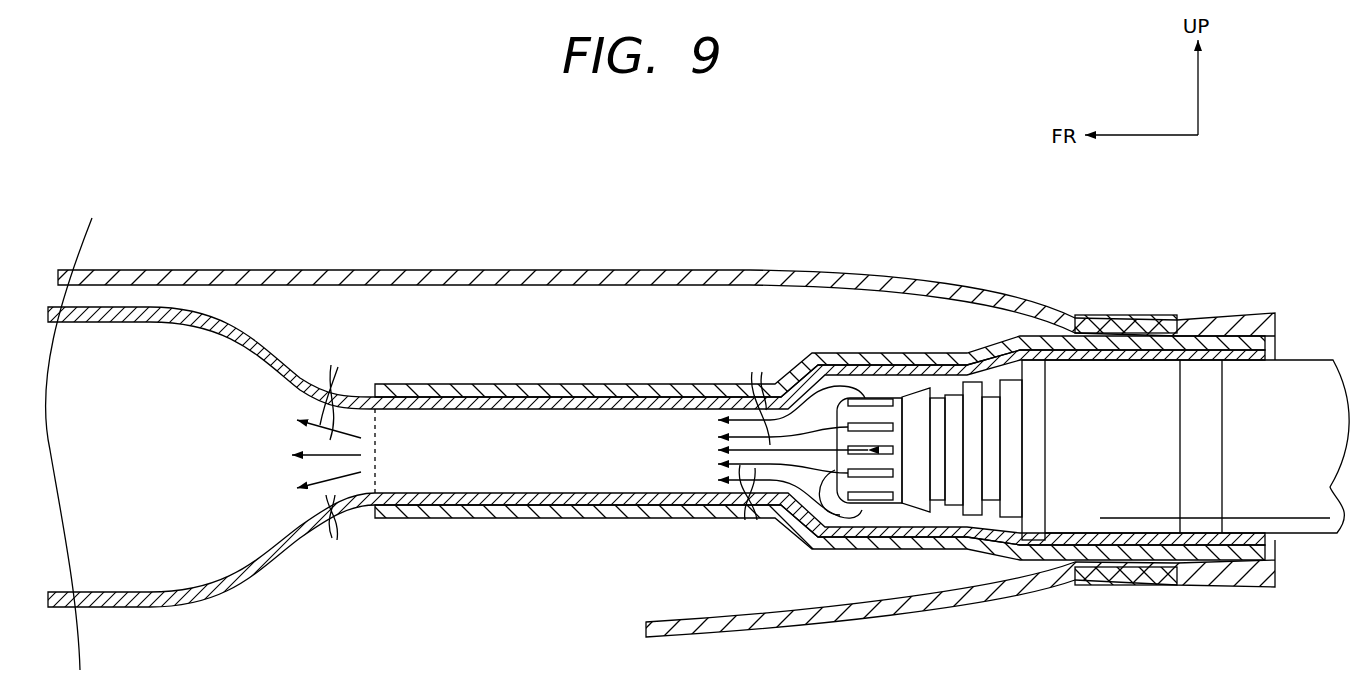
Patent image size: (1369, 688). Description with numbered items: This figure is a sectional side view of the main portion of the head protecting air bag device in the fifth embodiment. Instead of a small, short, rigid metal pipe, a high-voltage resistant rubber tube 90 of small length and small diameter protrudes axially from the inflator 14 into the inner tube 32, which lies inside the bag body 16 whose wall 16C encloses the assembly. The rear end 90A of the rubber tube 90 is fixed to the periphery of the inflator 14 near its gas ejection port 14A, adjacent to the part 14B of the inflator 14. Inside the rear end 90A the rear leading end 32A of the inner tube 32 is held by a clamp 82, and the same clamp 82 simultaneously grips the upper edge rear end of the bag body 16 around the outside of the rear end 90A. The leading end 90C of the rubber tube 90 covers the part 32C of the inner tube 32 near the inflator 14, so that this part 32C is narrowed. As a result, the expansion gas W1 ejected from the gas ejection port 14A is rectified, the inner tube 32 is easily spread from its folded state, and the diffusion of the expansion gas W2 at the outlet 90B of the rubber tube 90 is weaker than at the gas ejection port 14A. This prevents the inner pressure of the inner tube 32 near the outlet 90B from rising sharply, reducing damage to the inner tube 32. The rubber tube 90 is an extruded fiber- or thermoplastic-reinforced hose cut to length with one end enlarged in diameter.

The inflator 14 is at (1305, 352).
The gas ejection port 14A is at (838, 508).
The part of the inflator adjacent to the gas ejection port 14B is at (933, 460).
The bag body 16 is at (920, 273).
The outer casing wall 16C is at (686, 270).
The inner tube 32 is at (224, 324).
The rear leading end of the inner tube 32A is at (1240, 357).
The part of the inner tube near the inflator 32C is at (505, 412).
The clamp 82 is at (1137, 313).
The high-voltage resistant rubber tube 90 is at (577, 386).
The rear end of the high-voltage resistant rubber tube 90A is at (1125, 350).
The outlet of the high-voltage resistant rubber tube 90B is at (377, 521).
The leading end of the high-voltage resistant rubber tube 90C is at (467, 390).
The expansion gas flow arrow W1 is at (788, 452).
The diffusion of expansion gas arrow W2 is at (326, 452).